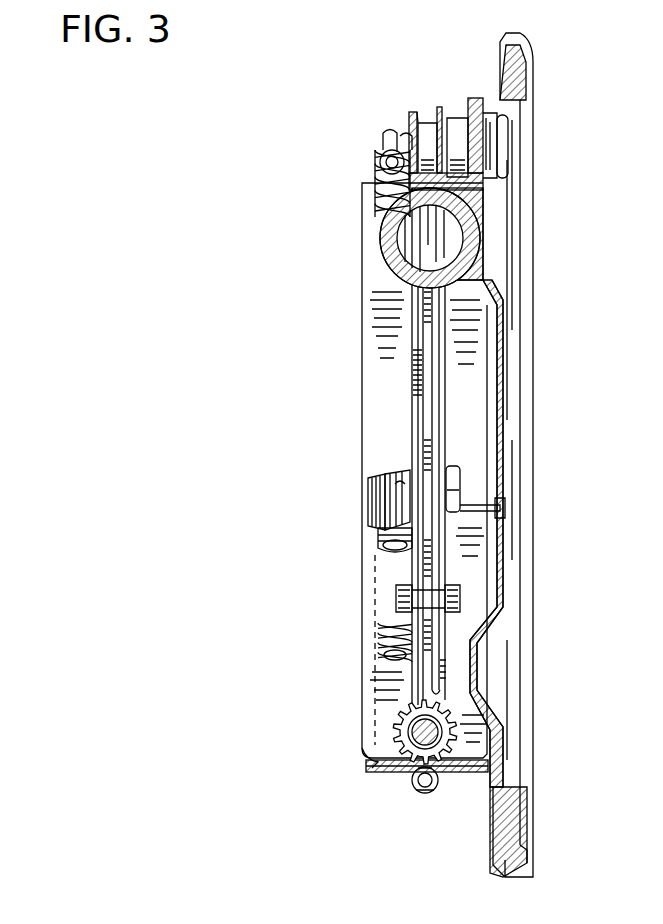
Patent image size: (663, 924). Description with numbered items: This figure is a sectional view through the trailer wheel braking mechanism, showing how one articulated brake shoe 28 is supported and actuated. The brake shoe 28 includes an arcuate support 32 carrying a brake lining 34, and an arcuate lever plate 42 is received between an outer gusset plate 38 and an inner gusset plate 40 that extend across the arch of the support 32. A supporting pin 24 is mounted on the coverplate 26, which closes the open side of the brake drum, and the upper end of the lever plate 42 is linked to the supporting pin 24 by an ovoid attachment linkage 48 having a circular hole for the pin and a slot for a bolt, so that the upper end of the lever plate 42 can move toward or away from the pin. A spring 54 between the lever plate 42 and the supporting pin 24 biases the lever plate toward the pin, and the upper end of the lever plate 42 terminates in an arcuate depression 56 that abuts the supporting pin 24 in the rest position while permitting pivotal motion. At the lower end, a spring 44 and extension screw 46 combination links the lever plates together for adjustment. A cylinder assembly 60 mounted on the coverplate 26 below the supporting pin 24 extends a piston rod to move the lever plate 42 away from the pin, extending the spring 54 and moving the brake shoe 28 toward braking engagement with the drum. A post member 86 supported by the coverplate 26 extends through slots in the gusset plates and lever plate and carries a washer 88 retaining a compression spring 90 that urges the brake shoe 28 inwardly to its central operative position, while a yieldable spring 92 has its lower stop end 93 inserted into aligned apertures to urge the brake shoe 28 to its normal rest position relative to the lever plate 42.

The supporting pin 24 is at (500, 135).
The coverplate 26 is at (500, 388).
The brake shoe 28 is at (352, 668).
The arcuate support 32 is at (364, 758).
The brake lining 34 is at (382, 770).
The outer gusset plate 38 is at (415, 376).
The inner gusset plate 40 is at (440, 382).
The arcuate lever plate 42 is at (428, 337).
The spring 44 is at (432, 790).
The extension screw 46 is at (412, 748).
The attachment linkage 48 is at (440, 112).
The spring 54 is at (383, 172).
The arcuate depression 56 is at (428, 112).
The cylinder assembly 60 is at (470, 232).
The post member 86 is at (470, 505).
The washer 88 is at (368, 507).
The compression spring 90 is at (372, 492).
The spring 92 is at (378, 547).
The stop end 93 is at (427, 662).